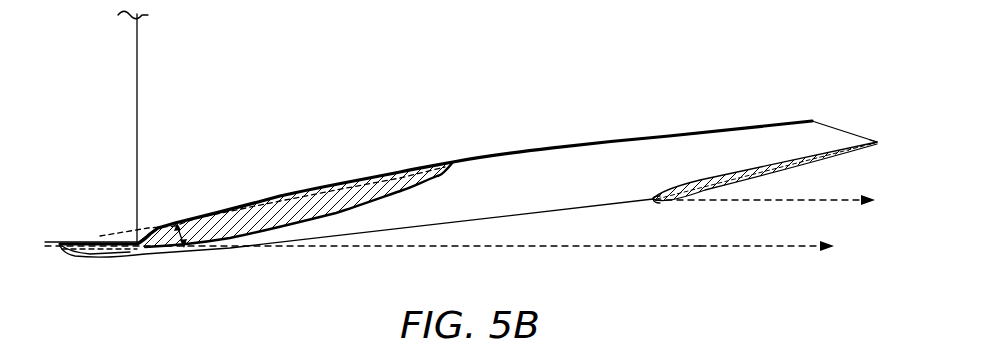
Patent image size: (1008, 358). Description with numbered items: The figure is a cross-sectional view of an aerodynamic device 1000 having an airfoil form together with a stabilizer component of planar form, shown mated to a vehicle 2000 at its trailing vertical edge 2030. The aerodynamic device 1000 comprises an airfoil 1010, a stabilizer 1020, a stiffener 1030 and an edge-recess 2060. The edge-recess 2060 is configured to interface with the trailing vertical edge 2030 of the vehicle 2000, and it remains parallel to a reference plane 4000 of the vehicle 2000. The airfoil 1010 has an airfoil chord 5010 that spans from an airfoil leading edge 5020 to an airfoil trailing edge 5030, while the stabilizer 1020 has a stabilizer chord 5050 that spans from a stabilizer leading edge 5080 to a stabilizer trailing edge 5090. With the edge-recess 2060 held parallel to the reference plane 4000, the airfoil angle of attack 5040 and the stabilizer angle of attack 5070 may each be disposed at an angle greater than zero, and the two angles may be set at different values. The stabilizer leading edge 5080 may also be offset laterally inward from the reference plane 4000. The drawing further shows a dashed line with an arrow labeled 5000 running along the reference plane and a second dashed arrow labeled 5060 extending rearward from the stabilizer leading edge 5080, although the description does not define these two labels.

The aerodynamic device 1000 is at (750, 81).
The airfoil 1010 is at (398, 190).
The stabilizer 1020 is at (688, 184).
The stiffener 1030 is at (581, 191).
The vehicle 2000 is at (101, 126).
The trailing vertical edge 2030 is at (129, 236).
The edge-recess 2060 is at (120, 254).
The reference plane 4000 is at (650, 248).
The flow direction arrow 5000 is at (734, 248).
The airfoil chord 5010 is at (350, 185).
The airfoil leading edge 5020 is at (61, 249).
The airfoil trailing edge 5030 is at (453, 159).
The airfoil angle of attack 5040 is at (184, 246).
The stabilizer chord 5050 is at (790, 159).
The flow direction arrow 5060 is at (800, 203).
The stabilizer angle of attack 5070 is at (738, 196).
The stabilizer leading edge 5080 is at (657, 203).
The stabilizer trailing edge 5090 is at (875, 140).